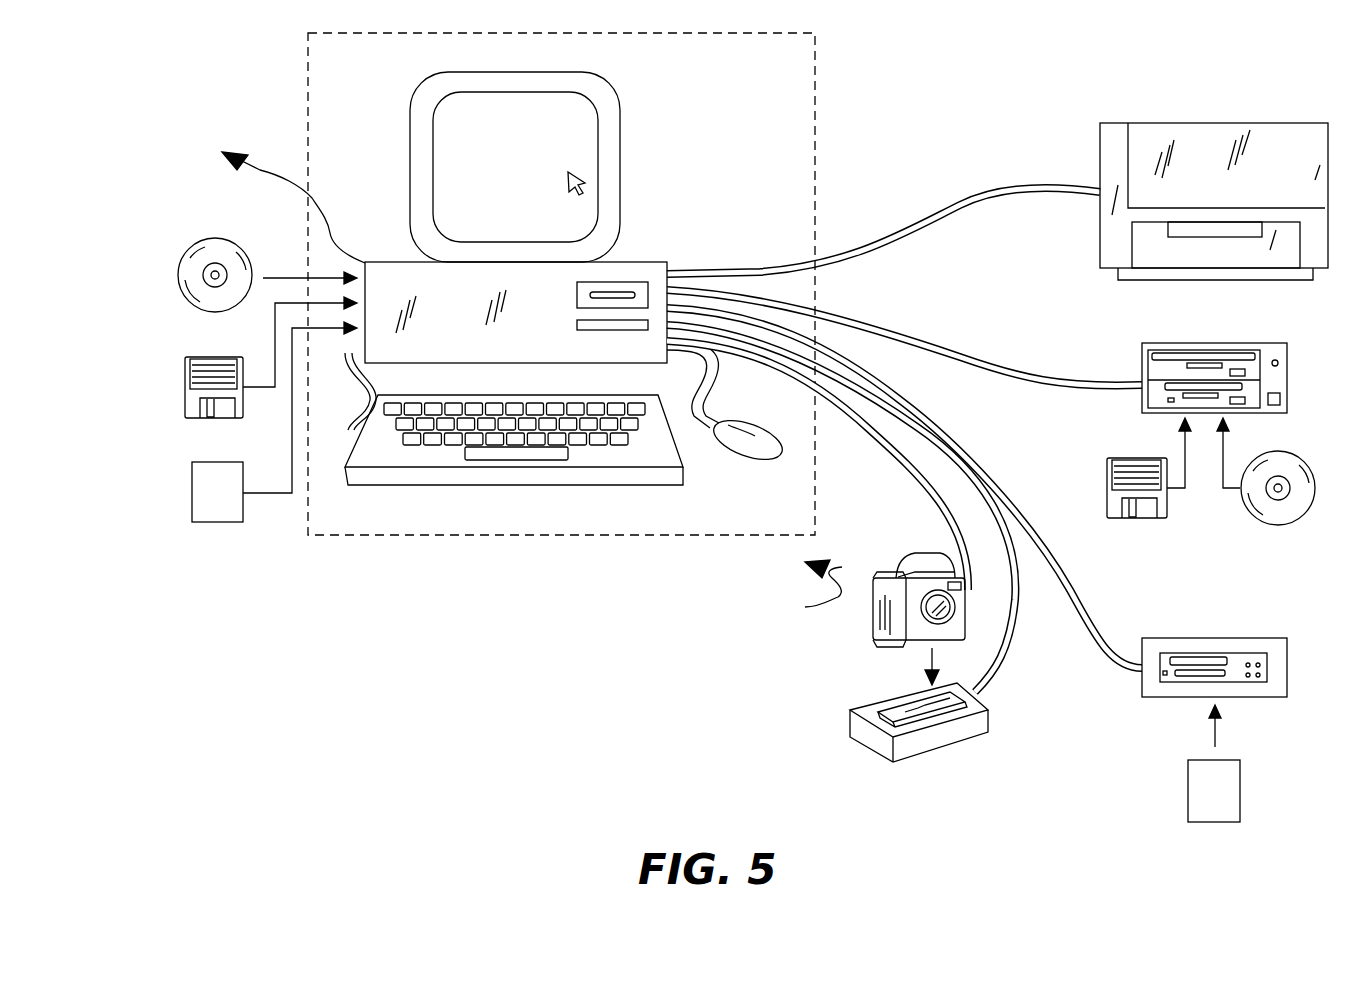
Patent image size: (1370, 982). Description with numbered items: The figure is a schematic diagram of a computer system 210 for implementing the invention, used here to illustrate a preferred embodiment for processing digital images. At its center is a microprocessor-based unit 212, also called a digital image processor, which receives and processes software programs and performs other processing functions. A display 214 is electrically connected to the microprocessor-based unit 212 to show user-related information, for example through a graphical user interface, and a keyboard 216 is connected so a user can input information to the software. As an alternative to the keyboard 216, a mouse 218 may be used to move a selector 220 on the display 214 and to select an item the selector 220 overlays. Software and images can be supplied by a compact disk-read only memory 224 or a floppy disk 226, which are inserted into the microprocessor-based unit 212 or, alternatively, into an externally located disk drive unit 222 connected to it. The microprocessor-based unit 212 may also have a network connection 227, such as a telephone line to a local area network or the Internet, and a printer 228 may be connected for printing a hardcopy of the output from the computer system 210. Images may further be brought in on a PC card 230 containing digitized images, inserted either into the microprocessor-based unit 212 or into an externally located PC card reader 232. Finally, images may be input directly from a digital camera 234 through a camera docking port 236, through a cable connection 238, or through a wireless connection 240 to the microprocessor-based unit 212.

The computer system 210 is at (308, 97).
The microprocessor-based unit 212 is at (388, 270).
The display 214 is at (425, 100).
The keyboard 216 is at (404, 460).
The mouse 218 is at (745, 442).
The selector 220 is at (584, 183).
The externally located disk drive unit 222 is at (1283, 380).
The compact disk-read only memory (CD-ROM) 224 is at (193, 272).
The floppy disk 226 is at (195, 387).
The network connection 227 is at (262, 175).
The printer 228 is at (1110, 152).
The personal computer card (PC card) 230 is at (200, 485).
The externally located PC card reader 232 is at (1283, 676).
The digital camera 234 is at (920, 556).
The camera docking port 236 is at (858, 726).
The cable connection 238 is at (915, 467).
The wireless connection 240 is at (798, 592).